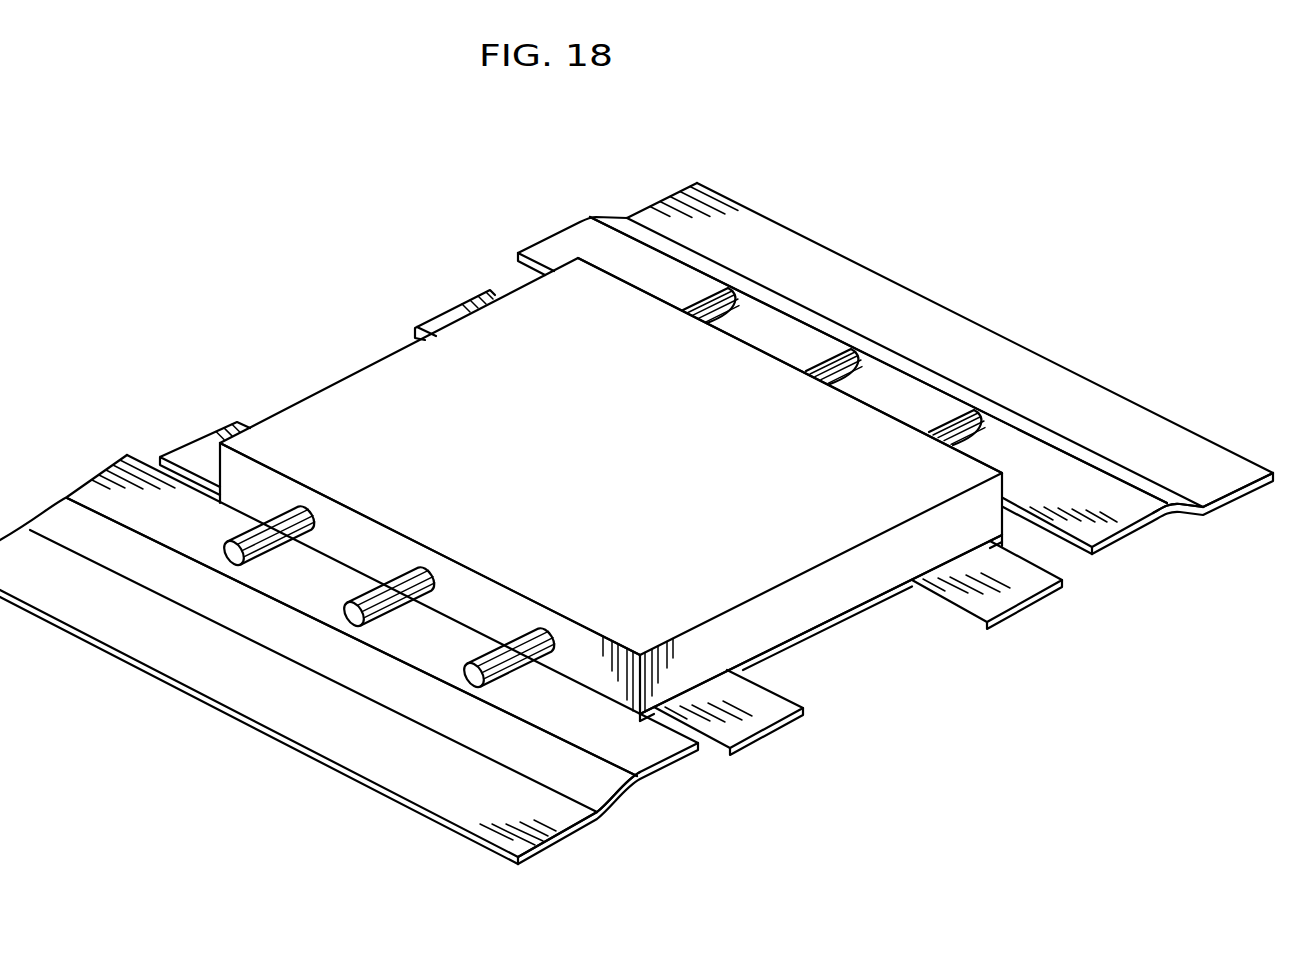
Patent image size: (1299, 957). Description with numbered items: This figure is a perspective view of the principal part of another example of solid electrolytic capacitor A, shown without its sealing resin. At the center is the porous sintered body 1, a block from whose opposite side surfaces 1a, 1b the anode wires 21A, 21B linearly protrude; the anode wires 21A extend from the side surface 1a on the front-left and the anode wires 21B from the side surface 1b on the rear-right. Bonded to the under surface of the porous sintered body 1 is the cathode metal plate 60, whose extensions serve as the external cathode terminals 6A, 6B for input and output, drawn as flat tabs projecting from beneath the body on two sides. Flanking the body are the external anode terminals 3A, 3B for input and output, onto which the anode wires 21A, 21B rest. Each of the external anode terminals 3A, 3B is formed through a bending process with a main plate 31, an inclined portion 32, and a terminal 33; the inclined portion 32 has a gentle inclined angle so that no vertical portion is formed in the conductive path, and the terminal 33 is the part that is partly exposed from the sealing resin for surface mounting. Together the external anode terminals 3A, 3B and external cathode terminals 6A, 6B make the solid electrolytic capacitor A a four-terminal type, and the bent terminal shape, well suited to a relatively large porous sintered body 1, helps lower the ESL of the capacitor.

The solid electrolytic capacitor A is at (238, 264).
The porous sintered body 1 is at (550, 425).
The side surface 1a is at (268, 498).
The side surface 1b is at (641, 284).
The external anode terminal 3A is at (333, 752).
The external anode terminal 3B is at (1075, 390).
The external cathode terminal 6A is at (1017, 583).
The external cathode terminal 6B is at (445, 320).
The anode wire 21A is at (300, 520).
The anode wire 21B is at (705, 312).
The main plate 31 is at (1125, 513).
The inclined portion 32 is at (1188, 506).
The terminal 33 is at (1225, 482).
The cathode metal plate 60 is at (840, 617).